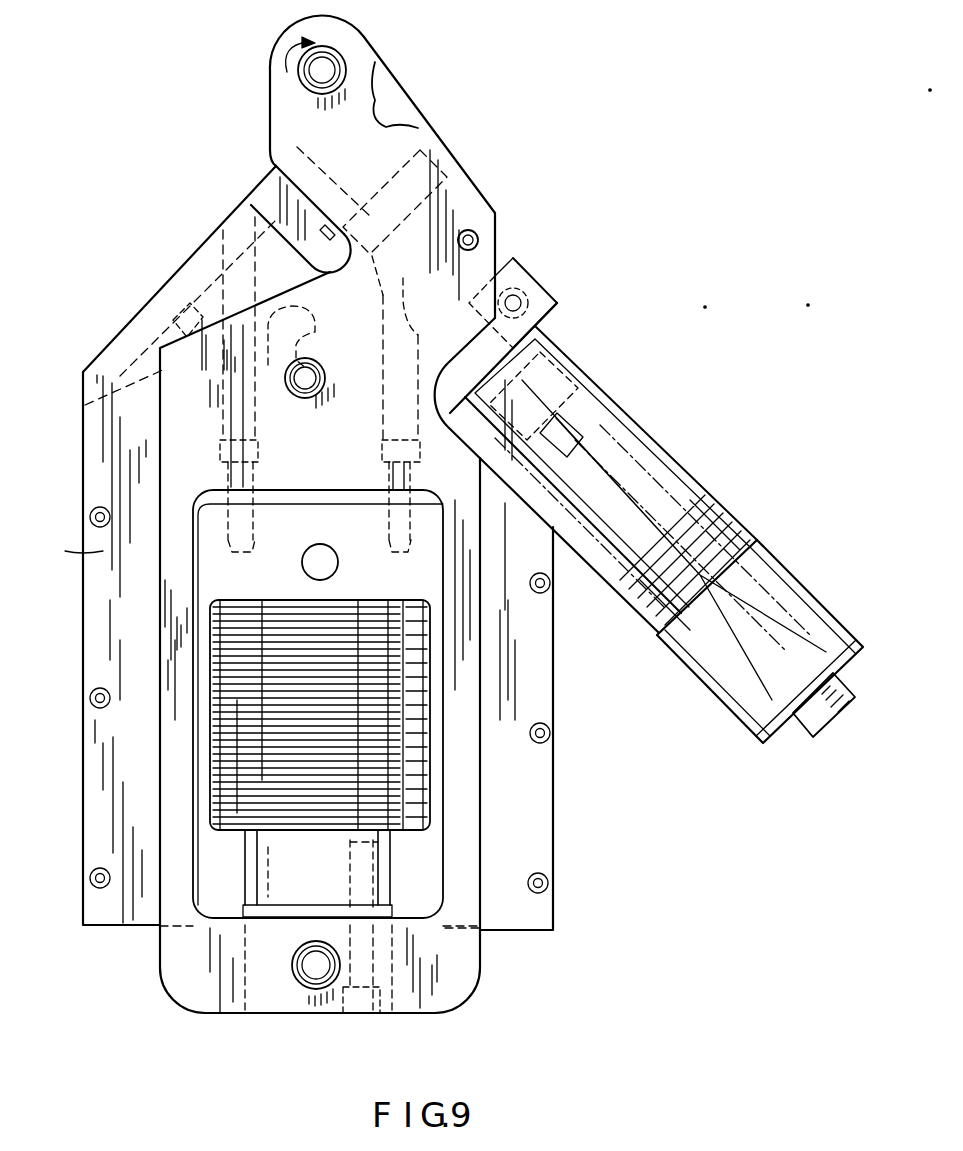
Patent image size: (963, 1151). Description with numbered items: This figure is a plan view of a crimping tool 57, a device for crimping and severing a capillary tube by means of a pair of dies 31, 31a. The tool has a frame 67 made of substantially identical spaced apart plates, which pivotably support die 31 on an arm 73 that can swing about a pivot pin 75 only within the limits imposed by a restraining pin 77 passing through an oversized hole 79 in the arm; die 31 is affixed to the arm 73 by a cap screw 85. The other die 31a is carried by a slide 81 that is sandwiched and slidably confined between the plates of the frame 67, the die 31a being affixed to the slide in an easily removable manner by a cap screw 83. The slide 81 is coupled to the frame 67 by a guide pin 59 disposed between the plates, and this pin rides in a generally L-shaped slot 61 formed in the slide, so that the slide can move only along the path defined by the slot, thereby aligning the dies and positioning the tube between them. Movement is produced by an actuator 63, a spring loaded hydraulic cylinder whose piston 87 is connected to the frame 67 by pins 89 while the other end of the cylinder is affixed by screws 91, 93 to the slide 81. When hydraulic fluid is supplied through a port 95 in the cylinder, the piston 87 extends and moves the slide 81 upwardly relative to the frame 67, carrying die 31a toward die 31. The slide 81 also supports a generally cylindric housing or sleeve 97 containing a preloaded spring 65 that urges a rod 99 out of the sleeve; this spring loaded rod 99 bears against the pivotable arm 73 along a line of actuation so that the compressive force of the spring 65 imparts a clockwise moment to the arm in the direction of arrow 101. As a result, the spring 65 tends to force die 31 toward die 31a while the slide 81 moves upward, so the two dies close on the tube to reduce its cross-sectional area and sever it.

The arrow 101 is at (287, 75).
The pivot pin 75 is at (329, 62).
The arm 73 is at (395, 97).
The crimping tool 57 is at (473, 82).
The die 31 is at (288, 168).
The die 31a is at (258, 194).
The cap screw 83 is at (210, 288).
The L-shaped slot 61 is at (318, 331).
The guide pin 59 is at (326, 375).
The cap screw 85 is at (448, 153).
The oversized hole 79 is at (476, 230).
The restraining pin 77 is at (473, 241).
The rod 99 is at (556, 369).
The spring 65 is at (660, 471).
The sleeve 97 is at (783, 561).
The slide 81 is at (107, 548).
The screw 91 is at (253, 538).
The screw 93 is at (392, 528).
The port 95 is at (303, 563).
The actuator 63 is at (306, 749).
The piston 87 is at (320, 861).
The frame 67 is at (453, 812).
The pins 89 is at (363, 1014).